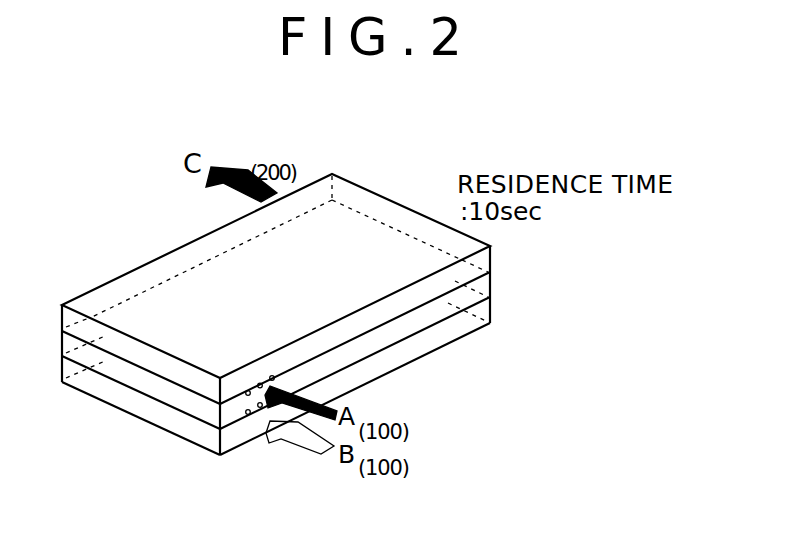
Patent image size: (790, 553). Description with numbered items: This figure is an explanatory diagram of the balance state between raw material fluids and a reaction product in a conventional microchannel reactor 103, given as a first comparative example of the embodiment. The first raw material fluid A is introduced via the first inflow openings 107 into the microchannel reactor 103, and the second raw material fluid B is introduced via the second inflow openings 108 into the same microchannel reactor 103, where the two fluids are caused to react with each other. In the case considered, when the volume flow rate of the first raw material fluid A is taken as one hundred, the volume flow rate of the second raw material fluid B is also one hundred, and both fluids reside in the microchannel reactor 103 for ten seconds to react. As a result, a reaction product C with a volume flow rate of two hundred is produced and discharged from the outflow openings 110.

The microchannel reactor 103 is at (407, 172).
The first inflow openings 107 is at (272, 376).
The second inflow openings 108 is at (248, 414).
The outflow openings 110 is at (323, 176).